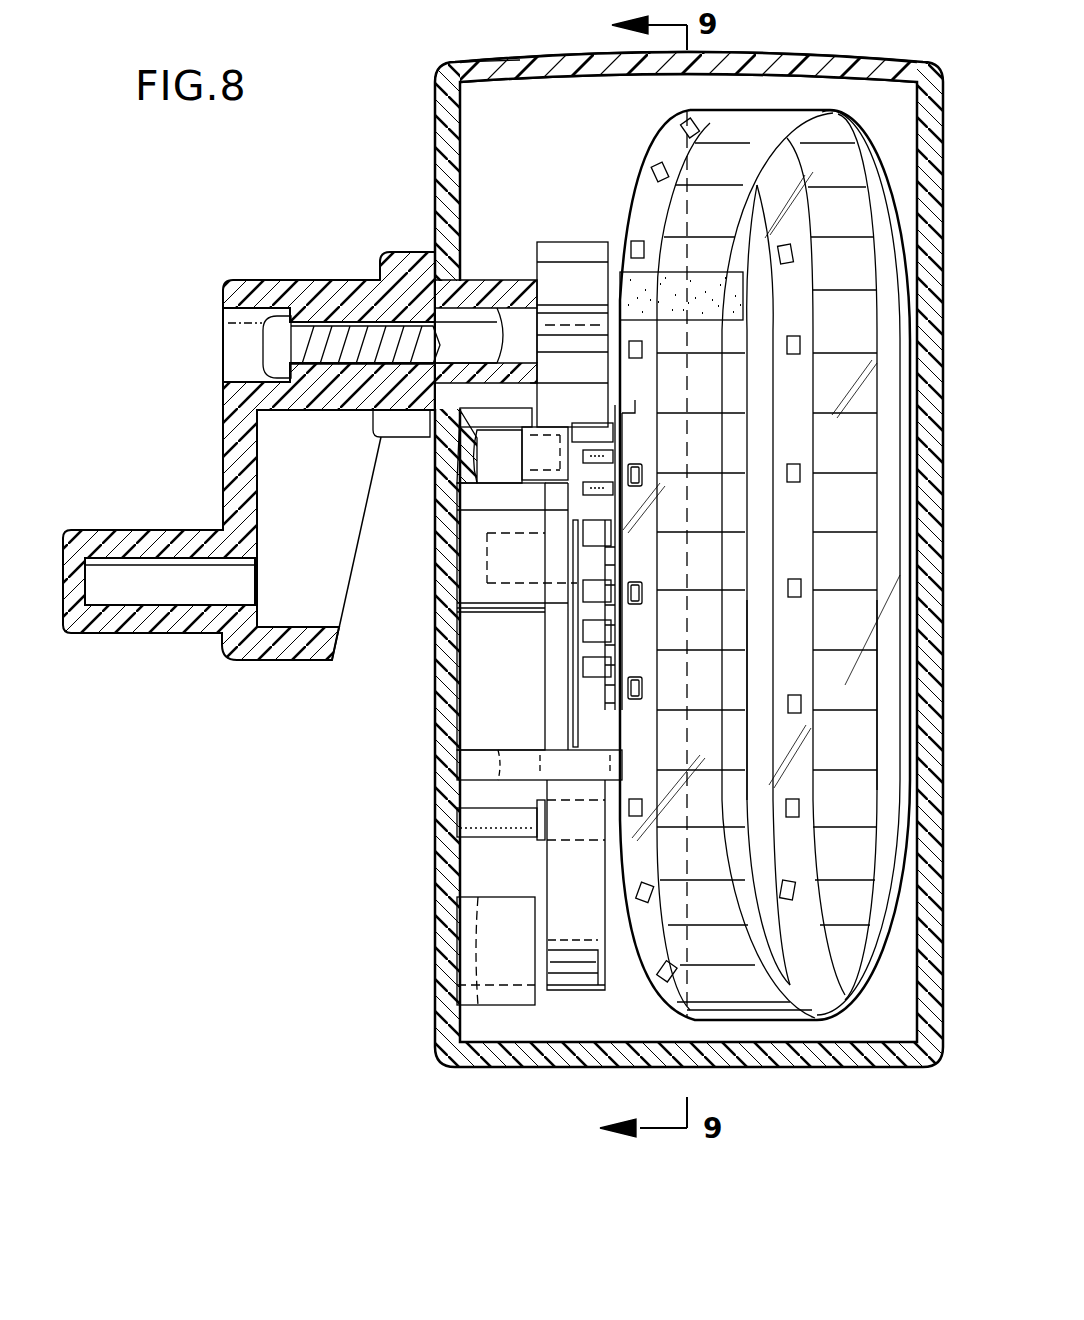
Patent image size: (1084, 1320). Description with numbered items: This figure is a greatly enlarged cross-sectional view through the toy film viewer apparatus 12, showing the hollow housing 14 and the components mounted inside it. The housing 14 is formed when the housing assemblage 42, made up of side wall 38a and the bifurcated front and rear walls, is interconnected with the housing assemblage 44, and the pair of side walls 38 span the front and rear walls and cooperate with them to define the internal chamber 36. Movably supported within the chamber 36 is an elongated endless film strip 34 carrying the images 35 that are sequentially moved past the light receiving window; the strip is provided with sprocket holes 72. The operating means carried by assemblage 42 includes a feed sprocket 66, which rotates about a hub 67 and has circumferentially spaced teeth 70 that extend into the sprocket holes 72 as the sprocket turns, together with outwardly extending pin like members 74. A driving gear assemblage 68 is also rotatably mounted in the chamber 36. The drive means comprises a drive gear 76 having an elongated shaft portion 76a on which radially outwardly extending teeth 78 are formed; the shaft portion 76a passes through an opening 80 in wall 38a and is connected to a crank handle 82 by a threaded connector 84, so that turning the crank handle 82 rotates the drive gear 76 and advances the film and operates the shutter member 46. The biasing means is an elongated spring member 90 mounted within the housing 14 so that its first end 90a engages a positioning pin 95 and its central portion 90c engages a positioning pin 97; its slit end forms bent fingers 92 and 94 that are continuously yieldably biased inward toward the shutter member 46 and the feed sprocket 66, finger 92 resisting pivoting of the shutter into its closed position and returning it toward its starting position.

The toy film viewer apparatus 12 is at (408, 971).
The housing 14 is at (478, 48).
The endless film strip 34 is at (658, 135).
The images 35 is at (698, 805).
The internal chamber 36 is at (892, 88).
The side walls 38 is at (433, 178).
The side wall 38a is at (432, 718).
The housing assemblage 42 is at (433, 132).
The housing assemblage 44 is at (825, 56).
The shutter member 46 is at (533, 457).
The feed sprocket 66 is at (630, 548).
The hub 67 is at (468, 597).
The driving gear assemblage 68 is at (555, 212).
The teeth 70 is at (645, 597).
The sprocket holes 72 is at (655, 167).
The pin like members 74 is at (593, 487).
The drive gear 76 is at (357, 298).
The shaft portion 76a is at (518, 323).
The teeth 78 is at (580, 245).
The opening 80 is at (428, 380).
The crank handle 82 is at (228, 470).
The threaded connector 84 is at (263, 347).
The spring member 90 is at (555, 868).
The first end 90a is at (572, 985).
The central portion 90c is at (545, 727).
The finger 92 is at (555, 528).
The finger 94 is at (590, 568).
The positioning pin 95 is at (572, 960).
The positioning pin 97 is at (530, 832).